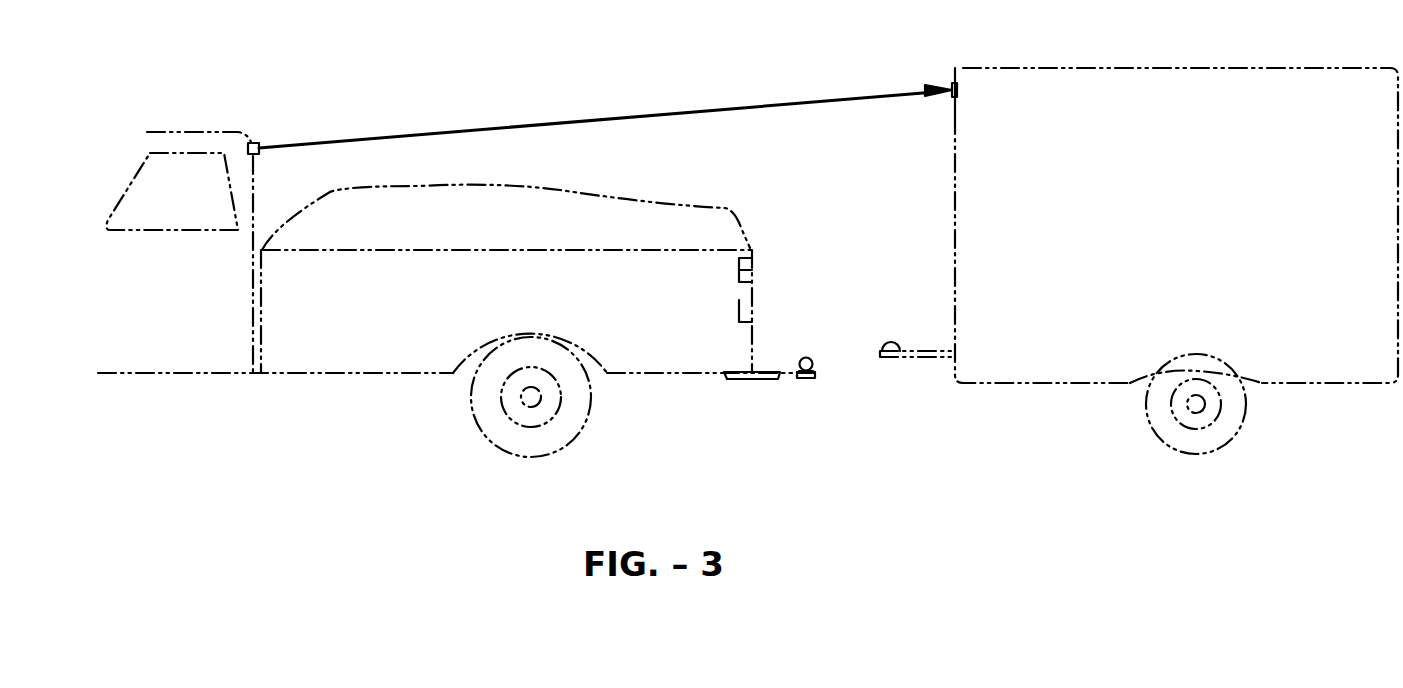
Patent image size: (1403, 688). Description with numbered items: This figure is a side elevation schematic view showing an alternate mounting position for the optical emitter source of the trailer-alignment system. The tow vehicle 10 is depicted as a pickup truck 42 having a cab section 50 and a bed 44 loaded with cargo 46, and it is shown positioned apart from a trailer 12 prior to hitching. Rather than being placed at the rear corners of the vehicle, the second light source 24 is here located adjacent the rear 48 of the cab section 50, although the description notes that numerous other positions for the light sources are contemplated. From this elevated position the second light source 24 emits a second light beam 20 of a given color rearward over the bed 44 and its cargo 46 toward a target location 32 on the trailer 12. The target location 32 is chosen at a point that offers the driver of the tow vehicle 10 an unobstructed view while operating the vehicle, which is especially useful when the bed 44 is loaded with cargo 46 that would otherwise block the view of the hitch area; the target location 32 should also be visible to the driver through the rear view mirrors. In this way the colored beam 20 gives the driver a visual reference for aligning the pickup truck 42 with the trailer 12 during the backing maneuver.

The tow vehicle 10 is at (200, 118).
The trailer 12 is at (1205, 66).
The second light beam 20 is at (576, 118).
The second light source 24 is at (259, 143).
The target location 32 is at (951, 86).
The pickup truck 42 is at (159, 364).
The bed 44 is at (367, 355).
The cargo 46 is at (601, 225).
The rear of cab section 48 is at (255, 172).
The cab section 50 is at (166, 128).